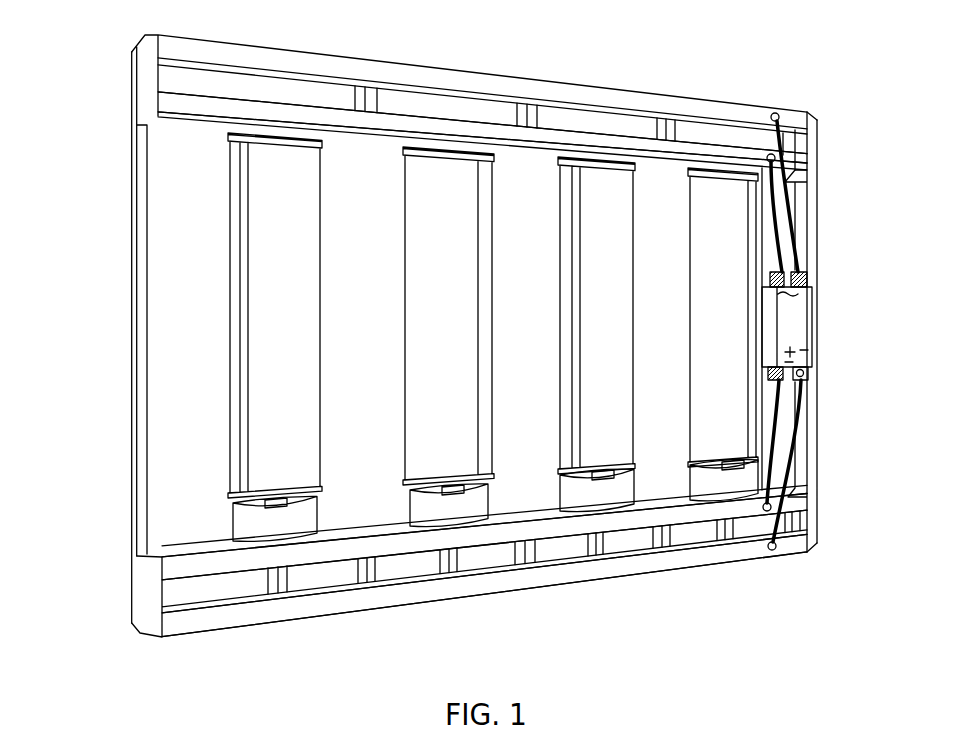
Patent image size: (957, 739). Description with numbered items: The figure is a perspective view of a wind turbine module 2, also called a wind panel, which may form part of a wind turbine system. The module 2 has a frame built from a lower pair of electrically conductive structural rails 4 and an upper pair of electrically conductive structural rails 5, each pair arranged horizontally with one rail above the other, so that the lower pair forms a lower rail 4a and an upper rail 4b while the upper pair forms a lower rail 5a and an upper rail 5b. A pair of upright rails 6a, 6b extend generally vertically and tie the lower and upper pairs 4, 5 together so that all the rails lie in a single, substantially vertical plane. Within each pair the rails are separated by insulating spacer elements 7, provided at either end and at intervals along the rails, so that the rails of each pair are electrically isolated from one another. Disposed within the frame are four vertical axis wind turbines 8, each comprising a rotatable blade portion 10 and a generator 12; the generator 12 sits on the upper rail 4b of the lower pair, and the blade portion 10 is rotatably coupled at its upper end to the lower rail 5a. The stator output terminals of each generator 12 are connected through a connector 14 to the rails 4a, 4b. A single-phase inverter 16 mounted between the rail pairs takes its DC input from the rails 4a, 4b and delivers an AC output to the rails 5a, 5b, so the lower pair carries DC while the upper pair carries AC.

The wind turbine module 2 is at (832, 73).
The lower pair of rails 4 is at (575, 556).
The lower rail of the lower pair 4a is at (250, 613).
The upper rail of the lower pair 4b is at (414, 548).
The upper pair of rails 5 is at (313, 87).
The lower rail of the upper pair 5a is at (568, 137).
The upper rail of the upper pair 5b is at (443, 77).
The upright rail 6a is at (133, 310).
The upright rail 6b is at (803, 213).
The insulating spacer element 7 is at (672, 540).
The vertical axis wind turbine 8 is at (334, 276).
The blade portion 10 is at (452, 285).
The generator 12 is at (312, 520).
The connector 14 is at (723, 542).
The single-phase inverter 16 is at (805, 330).